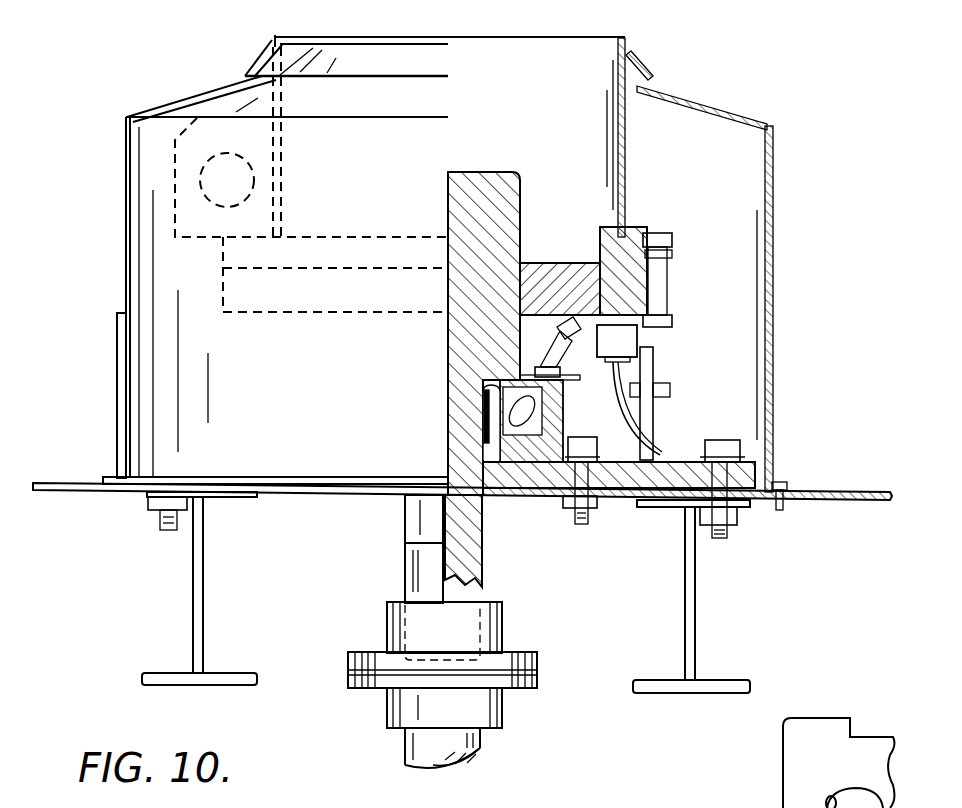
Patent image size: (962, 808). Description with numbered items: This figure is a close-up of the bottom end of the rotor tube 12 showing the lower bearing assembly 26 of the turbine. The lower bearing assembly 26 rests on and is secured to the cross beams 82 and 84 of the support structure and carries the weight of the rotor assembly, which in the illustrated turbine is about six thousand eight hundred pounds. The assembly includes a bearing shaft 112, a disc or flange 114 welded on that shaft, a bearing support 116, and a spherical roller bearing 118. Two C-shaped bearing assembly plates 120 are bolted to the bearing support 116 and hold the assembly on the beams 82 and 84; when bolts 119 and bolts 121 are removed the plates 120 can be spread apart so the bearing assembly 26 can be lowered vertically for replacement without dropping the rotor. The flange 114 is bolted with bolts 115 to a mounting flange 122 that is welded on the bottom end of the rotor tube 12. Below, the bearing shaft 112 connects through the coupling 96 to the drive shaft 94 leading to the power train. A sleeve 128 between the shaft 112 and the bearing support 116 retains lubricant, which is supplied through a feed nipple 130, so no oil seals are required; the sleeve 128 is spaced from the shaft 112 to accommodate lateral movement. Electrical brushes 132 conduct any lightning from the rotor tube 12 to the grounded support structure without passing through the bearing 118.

The rotor tube 12 is at (628, 137).
The lower bearing assembly 26 is at (118, 272).
The cross beam 82 is at (193, 590).
The cross beam 84 is at (695, 637).
The drive shaft 94 is at (482, 749).
The coupling 96 is at (537, 660).
The bearing shaft 112 is at (410, 570).
The flange 114 is at (547, 263).
The bolts 115 is at (658, 233).
The bearing support 116 is at (507, 497).
The spherical roller bearing 118 is at (538, 478).
The bolts 119 is at (582, 525).
The C-shaped bearing assembly plates 120 is at (628, 498).
The bolts 121 is at (723, 538).
The mounting flange 122 is at (672, 255).
The sleeve 128 is at (485, 398).
The feed nipple 130 is at (523, 347).
The electrical brushes 132 is at (622, 342).